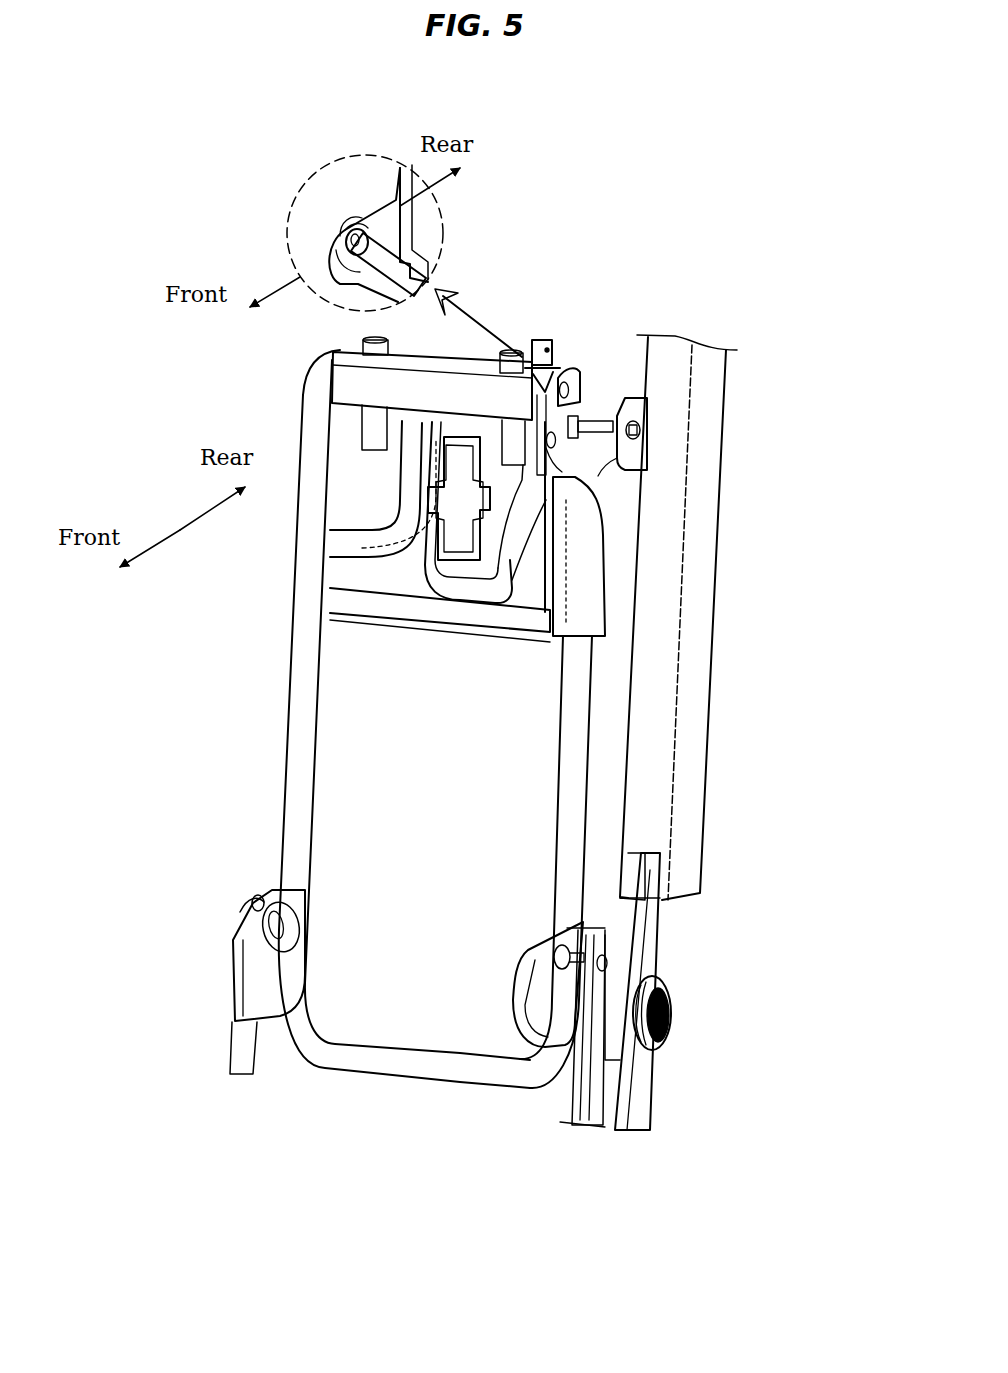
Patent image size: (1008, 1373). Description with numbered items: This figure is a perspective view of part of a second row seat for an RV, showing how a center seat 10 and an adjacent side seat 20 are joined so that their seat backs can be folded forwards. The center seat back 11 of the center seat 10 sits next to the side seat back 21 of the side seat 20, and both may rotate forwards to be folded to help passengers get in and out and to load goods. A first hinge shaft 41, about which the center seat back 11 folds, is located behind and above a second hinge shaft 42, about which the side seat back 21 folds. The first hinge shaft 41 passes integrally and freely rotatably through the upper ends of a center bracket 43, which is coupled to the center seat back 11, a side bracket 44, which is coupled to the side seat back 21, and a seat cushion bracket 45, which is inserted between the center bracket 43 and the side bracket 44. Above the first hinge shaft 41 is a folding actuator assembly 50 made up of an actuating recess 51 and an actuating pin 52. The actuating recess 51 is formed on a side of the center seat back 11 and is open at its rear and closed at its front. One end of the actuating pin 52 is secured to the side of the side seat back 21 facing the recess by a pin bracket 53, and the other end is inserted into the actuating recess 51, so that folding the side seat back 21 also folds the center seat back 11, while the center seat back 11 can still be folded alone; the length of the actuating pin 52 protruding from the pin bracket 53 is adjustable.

The center seat 10 is at (372, 637).
The center seat back 11 is at (297, 752).
The side seat 20 is at (741, 617).
The side seat back 21 is at (693, 738).
The first hinge shaft 41 is at (247, 913).
The second hinge shaft 42 is at (670, 1015).
The center bracket 43 is at (257, 968).
The side bracket 44 is at (615, 938).
The seat cushion bracket 45 is at (232, 1047).
The folding actuator assembly 50 is at (666, 427).
The actuating recess 51 is at (400, 213).
The actuating pin 52 is at (430, 255).
The pin bracket 53 is at (638, 400).